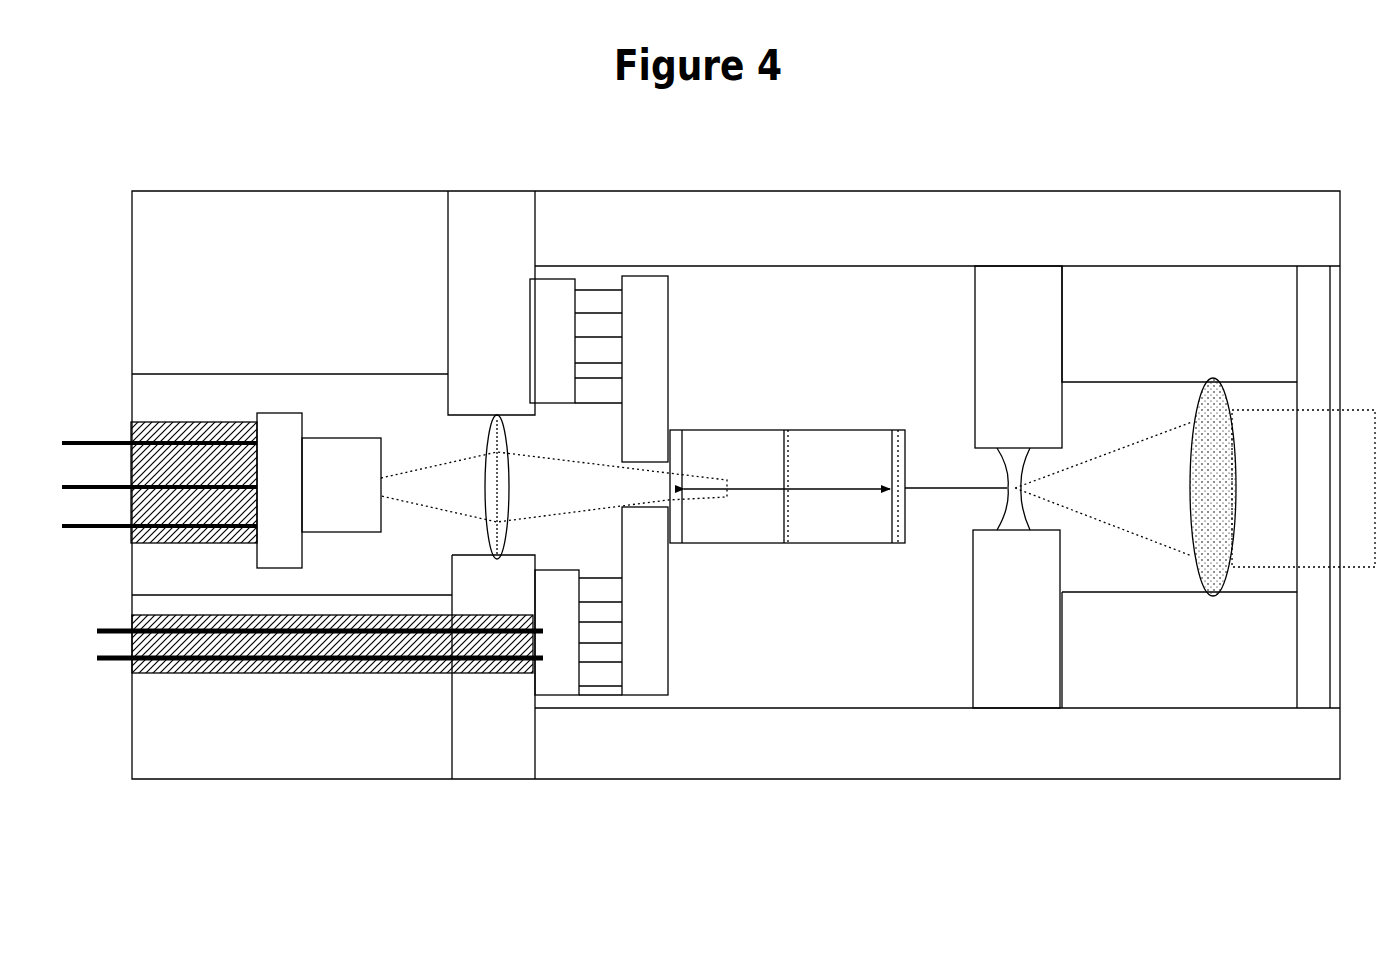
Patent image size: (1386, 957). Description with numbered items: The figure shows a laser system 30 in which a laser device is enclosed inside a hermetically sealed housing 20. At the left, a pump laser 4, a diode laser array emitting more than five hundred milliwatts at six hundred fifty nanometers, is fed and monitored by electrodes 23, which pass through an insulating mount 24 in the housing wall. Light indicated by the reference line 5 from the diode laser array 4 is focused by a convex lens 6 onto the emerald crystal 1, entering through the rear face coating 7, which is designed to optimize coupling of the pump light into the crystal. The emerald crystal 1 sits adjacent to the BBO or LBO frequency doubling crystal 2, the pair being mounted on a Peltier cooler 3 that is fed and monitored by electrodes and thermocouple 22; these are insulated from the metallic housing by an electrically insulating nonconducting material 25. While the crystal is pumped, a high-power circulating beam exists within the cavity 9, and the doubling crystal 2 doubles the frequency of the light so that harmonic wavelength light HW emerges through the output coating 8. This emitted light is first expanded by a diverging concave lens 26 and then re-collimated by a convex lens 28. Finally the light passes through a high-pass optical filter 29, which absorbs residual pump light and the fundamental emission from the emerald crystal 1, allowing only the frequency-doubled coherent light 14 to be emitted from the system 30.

The emerald crystal 1 is at (722, 533).
The frequency doubling crystal 2 is at (805, 442).
The Peltier cooler 3 is at (643, 677).
The diode laser array 4 is at (278, 432).
The light 5 is at (533, 492).
The convex lens 6 is at (490, 512).
The rear face coating 7 is at (683, 430).
The output coating 8 is at (897, 427).
The cavity 9 is at (833, 488).
The coherent light 14 is at (1275, 457).
The hermetically sealed housing 20 is at (1120, 202).
The electrodes and thermocouple 22 is at (97, 658).
The electrodes 23 is at (100, 440).
The insulating mount 24 is at (195, 422).
The electrically insulating nonconducting material 25 is at (170, 673).
The diverging concave lens 26 is at (1007, 518).
The convex lens 28 is at (1222, 597).
The high-pass optical filter 29 is at (1320, 650).
The laser system 30 is at (570, 184).
The harmonic wavelength light HW is at (940, 488).